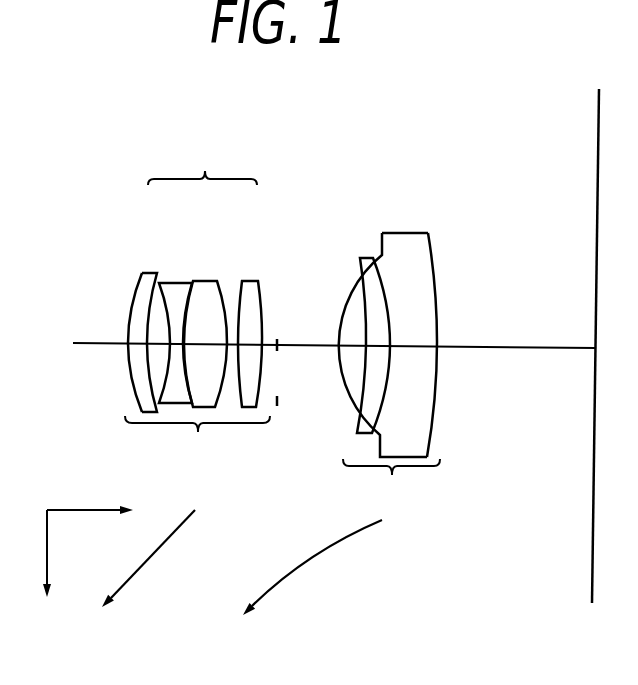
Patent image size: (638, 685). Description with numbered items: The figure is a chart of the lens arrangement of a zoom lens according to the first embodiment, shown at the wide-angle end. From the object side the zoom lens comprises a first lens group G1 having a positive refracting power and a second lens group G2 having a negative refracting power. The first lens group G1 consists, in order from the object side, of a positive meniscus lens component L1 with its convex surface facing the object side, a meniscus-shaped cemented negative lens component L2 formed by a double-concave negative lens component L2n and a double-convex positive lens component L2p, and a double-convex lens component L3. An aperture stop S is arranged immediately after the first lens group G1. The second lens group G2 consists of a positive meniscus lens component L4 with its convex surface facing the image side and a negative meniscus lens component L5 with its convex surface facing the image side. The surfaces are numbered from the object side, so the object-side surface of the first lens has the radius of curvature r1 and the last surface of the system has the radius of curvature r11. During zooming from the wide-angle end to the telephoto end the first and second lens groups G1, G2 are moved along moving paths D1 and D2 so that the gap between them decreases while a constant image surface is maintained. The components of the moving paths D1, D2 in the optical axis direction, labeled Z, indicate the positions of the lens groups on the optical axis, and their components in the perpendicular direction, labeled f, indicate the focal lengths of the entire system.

The positive meniscus lens component L1 is at (117, 272).
The cemented negative lens component L2 is at (202, 269).
The double-concave negative lens component L2n is at (177, 282).
The double-convex positive lens component L2p is at (207, 282).
The double-convex lens component L3 is at (250, 282).
The positive meniscus lens component L4 is at (368, 257).
The negative meniscus lens component L5 is at (417, 295).
The aperture stop S is at (280, 287).
The radius of curvature of the first lens surface r1 is at (128, 369).
The radius of curvature of the eleventh lens surface r11 is at (432, 398).
The first lens group G1 is at (188, 299).
The second lens group G2 is at (414, 326).
The optical axis direction Z is at (90, 494).
The focal length direction f is at (36, 557).
The moving path of the first lens group D1 is at (167, 540).
The moving path of the second lens group D2 is at (310, 558).